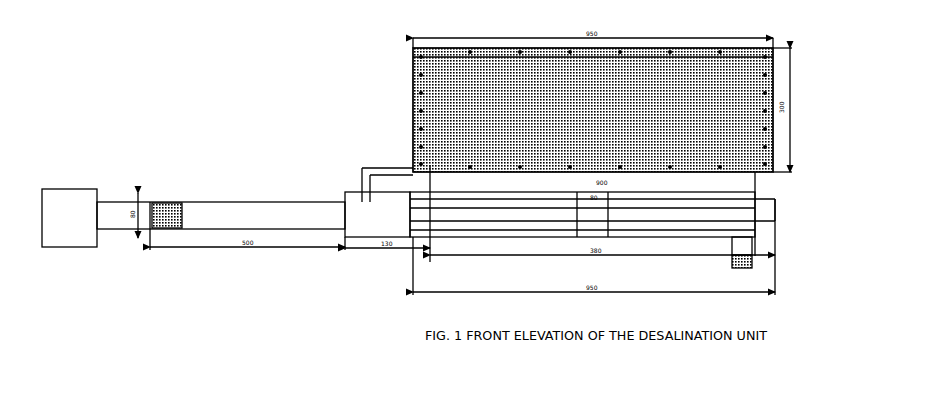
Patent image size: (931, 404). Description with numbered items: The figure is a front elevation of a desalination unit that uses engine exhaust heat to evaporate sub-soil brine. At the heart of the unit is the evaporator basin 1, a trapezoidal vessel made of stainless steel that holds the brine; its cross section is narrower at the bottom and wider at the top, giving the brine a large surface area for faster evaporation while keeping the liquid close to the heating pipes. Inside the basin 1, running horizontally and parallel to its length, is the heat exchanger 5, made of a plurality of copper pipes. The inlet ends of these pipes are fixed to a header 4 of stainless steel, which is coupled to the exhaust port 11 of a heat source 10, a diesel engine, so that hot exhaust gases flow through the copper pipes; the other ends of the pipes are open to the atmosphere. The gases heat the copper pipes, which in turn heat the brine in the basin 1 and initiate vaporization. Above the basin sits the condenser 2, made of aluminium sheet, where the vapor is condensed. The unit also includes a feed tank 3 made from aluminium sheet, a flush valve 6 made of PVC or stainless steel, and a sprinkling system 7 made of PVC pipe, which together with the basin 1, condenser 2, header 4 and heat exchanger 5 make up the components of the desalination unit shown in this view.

The evaporator basin 1 is at (397, 163).
The condenser 2 is at (554, 108).
The feed tank 3 is at (592, 256).
The header 4 is at (340, 188).
The heat exchanger 5 is at (785, 194).
The flush valve 6 is at (776, 244).
The sprinkling system 7 is at (624, 109).
The heat source 10 is at (66, 251).
The exhaust port 11 is at (113, 234).